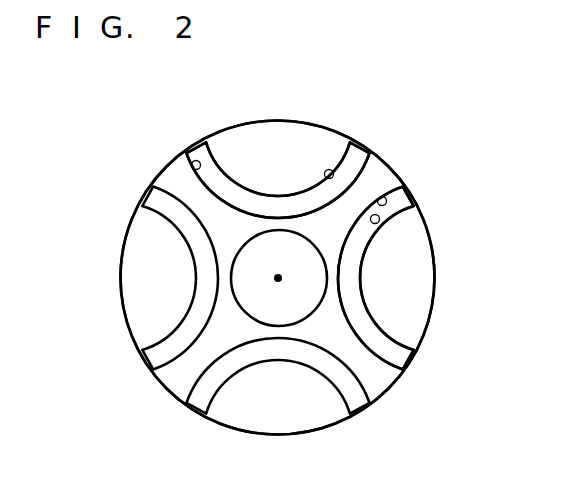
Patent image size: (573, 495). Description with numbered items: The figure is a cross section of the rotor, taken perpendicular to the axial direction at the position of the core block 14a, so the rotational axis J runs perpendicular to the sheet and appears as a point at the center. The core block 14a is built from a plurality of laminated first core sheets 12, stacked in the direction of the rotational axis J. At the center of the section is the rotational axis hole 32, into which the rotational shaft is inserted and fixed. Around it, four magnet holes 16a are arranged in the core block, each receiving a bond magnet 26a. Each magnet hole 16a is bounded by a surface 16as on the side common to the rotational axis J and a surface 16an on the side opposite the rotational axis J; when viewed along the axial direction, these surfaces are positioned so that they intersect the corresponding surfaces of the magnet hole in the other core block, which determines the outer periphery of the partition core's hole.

The first core sheet 12 is at (378, 382).
The core block 14a is at (405, 163).
The magnet hole 16a is at (297, 173).
The surface of the magnet hole 16an is at (326, 171).
The surface of the magnet hole 16as is at (192, 167).
The bond magnet 26a is at (229, 192).
The rotational axis hole 32 is at (230, 262).
The rotational axis J is at (278, 282).